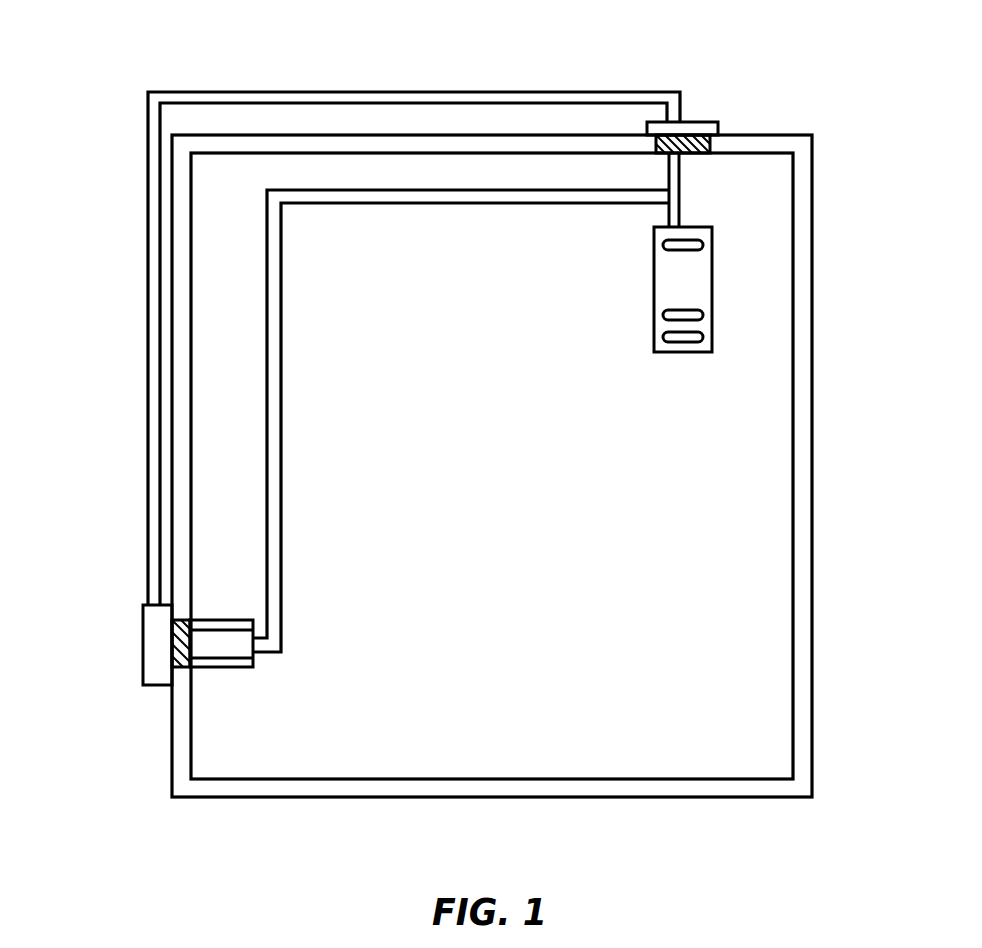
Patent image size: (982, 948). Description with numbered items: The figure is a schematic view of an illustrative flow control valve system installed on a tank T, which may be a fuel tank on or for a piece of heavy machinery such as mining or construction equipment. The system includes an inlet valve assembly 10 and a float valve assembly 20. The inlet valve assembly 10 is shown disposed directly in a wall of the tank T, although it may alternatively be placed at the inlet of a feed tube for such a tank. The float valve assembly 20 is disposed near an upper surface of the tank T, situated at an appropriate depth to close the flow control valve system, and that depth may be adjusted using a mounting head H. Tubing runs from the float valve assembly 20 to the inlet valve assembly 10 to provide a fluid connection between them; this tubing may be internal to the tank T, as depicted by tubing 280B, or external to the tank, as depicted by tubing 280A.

The tank T is at (812, 568).
The inlet valve assembly 10 is at (131, 697).
The float valve assembly 20 is at (748, 293).
The mounting head H is at (718, 121).
The tubing 280A is at (422, 92).
The tubing 280B is at (425, 203).